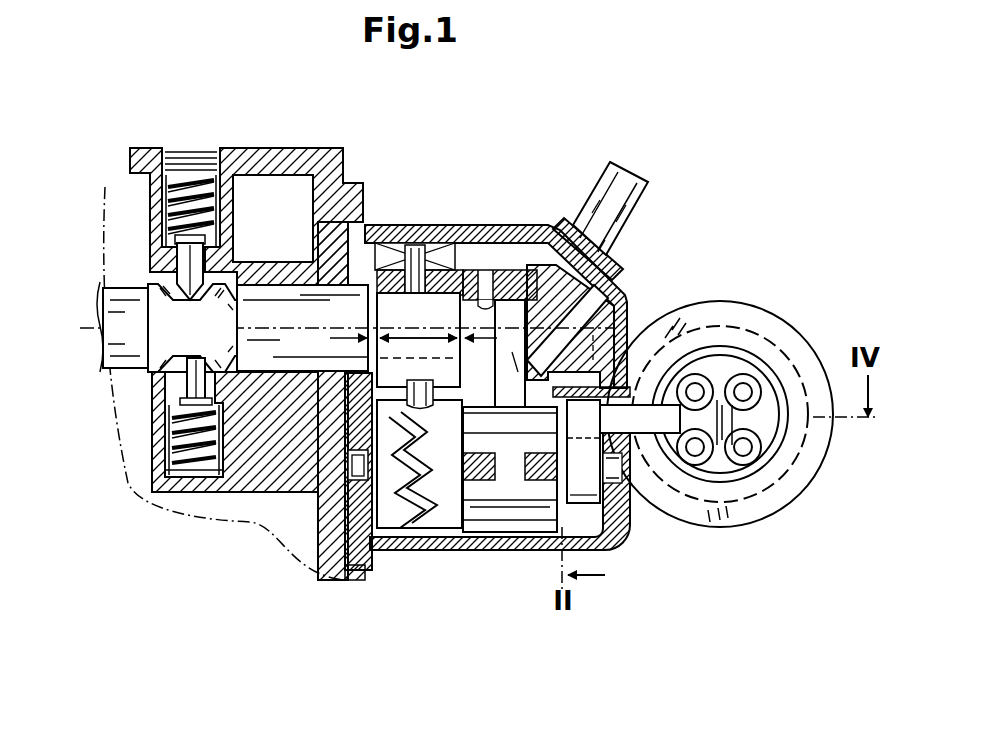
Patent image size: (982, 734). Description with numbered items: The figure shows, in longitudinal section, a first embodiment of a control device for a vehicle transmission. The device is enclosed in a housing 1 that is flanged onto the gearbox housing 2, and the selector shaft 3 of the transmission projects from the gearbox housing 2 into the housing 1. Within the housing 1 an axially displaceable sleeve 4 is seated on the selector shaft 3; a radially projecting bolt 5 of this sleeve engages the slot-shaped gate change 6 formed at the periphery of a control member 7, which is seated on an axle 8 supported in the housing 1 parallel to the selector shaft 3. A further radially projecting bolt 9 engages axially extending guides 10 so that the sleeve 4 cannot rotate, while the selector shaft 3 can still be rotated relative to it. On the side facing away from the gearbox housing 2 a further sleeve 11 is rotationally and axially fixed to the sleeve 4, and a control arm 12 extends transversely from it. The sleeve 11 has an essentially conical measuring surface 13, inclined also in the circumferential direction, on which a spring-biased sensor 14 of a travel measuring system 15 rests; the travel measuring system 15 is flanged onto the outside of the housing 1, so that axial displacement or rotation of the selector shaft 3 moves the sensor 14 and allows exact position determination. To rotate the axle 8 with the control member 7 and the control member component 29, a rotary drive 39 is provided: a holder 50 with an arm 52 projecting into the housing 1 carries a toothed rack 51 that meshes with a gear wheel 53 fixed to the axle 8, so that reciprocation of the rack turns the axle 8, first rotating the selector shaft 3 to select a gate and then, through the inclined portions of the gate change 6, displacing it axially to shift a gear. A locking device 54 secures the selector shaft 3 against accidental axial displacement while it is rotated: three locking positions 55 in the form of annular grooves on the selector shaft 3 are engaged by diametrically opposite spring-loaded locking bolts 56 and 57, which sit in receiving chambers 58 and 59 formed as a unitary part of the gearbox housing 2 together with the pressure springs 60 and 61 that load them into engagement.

The housing 1 is at (428, 230).
The gearbox housing 2 is at (272, 160).
The selector shaft 3 is at (300, 280).
The sleeve 4 is at (458, 263).
The bolt 5 is at (318, 492).
The gate change 6 is at (415, 477).
The control member 7 is at (448, 495).
The axle 8 is at (365, 468).
The bolt 9 is at (412, 257).
The guides 10 is at (442, 257).
The sleeve 11 is at (505, 287).
The control arm 12 is at (627, 410).
The measuring surface 13 is at (592, 300).
The sensor 14 is at (560, 230).
The travel measuring system 15 is at (607, 190).
The control member component 29 is at (500, 502).
The rotary drive 39 is at (758, 528).
The holder 50 is at (727, 377).
The toothed rack 51 is at (660, 338).
The arm 52 is at (707, 330).
The gear wheel 53 is at (587, 483).
The locking device 54 is at (152, 136).
The locking positions 55 is at (187, 297).
The locking bolt 56 is at (178, 250).
The locking bolt 57 is at (190, 385).
The receiving chamber 58 is at (220, 177).
The receiving chamber 59 is at (213, 475).
The pressure spring 60 is at (193, 200).
The pressure spring 61 is at (172, 480).